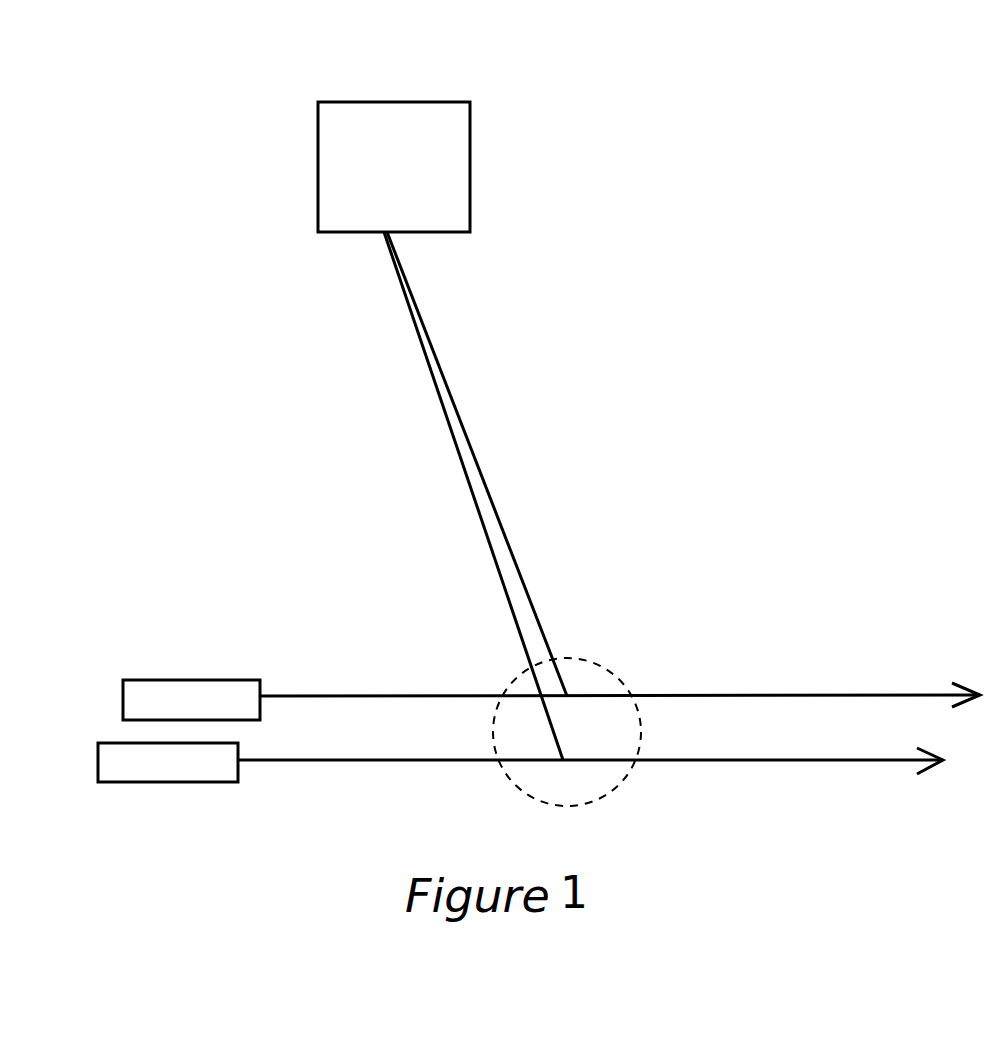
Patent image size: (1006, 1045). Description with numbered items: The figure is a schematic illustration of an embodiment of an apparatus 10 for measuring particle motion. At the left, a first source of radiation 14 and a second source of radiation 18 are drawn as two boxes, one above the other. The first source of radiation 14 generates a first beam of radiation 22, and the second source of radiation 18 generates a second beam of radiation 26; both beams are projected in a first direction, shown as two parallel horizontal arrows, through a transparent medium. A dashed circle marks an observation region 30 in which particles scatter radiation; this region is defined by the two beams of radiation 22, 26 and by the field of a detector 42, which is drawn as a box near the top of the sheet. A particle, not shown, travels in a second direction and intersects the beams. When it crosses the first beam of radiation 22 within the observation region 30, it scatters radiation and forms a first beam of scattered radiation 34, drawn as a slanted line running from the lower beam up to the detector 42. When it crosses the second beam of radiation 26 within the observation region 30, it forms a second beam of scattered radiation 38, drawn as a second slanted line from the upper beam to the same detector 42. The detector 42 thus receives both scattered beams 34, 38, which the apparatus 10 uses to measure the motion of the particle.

The apparatus 10 is at (668, 138).
The first source of radiation 14 is at (137, 782).
The second source of radiation 18 is at (168, 680).
The first beam of radiation 22 is at (317, 760).
The second beam of radiation 26 is at (323, 696).
The observation region 30 is at (593, 660).
The first beam of scattered radiation 34 is at (477, 508).
The second beam of scattered radiation 38 is at (477, 453).
The detector 42 is at (428, 98).